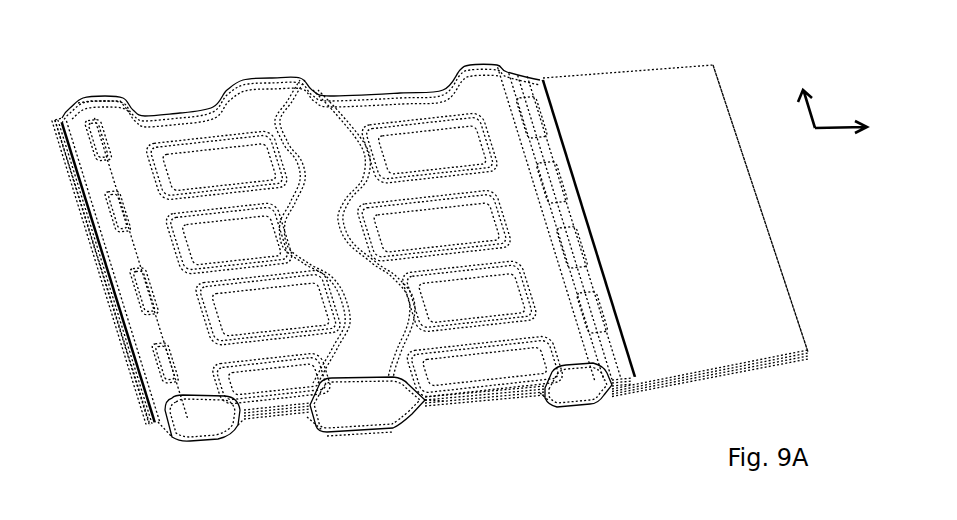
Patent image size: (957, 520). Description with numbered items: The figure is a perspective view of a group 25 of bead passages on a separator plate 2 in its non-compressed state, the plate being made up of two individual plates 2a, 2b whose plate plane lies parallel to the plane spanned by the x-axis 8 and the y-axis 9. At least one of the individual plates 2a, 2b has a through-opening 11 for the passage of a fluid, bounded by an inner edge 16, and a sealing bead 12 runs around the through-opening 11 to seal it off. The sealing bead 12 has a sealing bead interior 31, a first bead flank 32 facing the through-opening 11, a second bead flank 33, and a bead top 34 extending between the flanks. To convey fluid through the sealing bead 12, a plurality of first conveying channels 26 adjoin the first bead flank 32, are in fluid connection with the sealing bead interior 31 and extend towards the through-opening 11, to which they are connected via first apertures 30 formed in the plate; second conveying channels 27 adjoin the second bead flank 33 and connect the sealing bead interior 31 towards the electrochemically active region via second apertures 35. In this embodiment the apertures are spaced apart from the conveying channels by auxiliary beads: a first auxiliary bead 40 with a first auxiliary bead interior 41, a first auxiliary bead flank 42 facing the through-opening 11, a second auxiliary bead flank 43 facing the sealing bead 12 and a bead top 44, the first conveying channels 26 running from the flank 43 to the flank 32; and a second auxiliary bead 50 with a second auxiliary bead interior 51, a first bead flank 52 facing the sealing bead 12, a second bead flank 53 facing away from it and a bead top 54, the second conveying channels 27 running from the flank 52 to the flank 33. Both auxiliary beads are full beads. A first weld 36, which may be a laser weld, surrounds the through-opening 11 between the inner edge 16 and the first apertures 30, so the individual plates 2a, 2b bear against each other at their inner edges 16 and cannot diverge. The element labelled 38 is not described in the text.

The group of bead passages 25 is at (185, 50).
The through-opening 11 is at (69, 389).
The sealing bead 12 is at (300, 120).
The first conveying channels 26 is at (218, 205).
The second conveying channels 27 is at (398, 112).
The bead top 44 is at (108, 108).
The first auxiliary bead 40 is at (122, 130).
The inner edge 16 is at (140, 390).
The first aperture 30 is at (120, 221).
The first weld 36 is at (115, 292).
The first auxiliary bead interior 41 is at (202, 420).
The first auxiliary bead flank 42 is at (175, 432).
The second auxiliary bead flank 43 is at (230, 432).
The sealing bead interior 31 is at (362, 412).
The first bead flank 32 is at (312, 430).
The second bead flank 33 is at (410, 410).
The bead top 34 is at (340, 433).
The second auxiliary bead interior 51 is at (572, 387).
The first bead flank 52 is at (543, 403).
The second bead flank 53 is at (604, 394).
The second auxiliary bead 50 is at (525, 213).
The bead top 54 is at (503, 140).
The second aperture 35 is at (582, 258).
The bend line 38 is at (636, 358).
The separator plate 2 is at (688, 103).
The individual plate 2a is at (767, 337).
The individual plate 2b is at (775, 373).
The x-axis 8 is at (841, 128).
The y-axis 9 is at (808, 112).